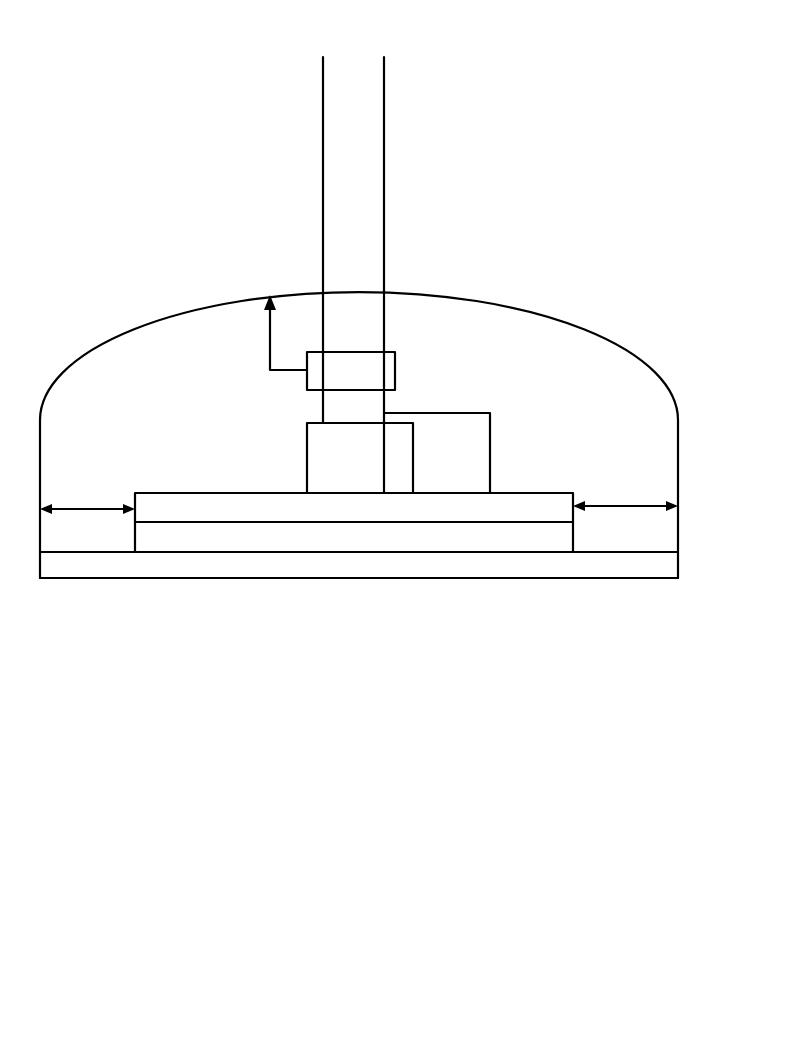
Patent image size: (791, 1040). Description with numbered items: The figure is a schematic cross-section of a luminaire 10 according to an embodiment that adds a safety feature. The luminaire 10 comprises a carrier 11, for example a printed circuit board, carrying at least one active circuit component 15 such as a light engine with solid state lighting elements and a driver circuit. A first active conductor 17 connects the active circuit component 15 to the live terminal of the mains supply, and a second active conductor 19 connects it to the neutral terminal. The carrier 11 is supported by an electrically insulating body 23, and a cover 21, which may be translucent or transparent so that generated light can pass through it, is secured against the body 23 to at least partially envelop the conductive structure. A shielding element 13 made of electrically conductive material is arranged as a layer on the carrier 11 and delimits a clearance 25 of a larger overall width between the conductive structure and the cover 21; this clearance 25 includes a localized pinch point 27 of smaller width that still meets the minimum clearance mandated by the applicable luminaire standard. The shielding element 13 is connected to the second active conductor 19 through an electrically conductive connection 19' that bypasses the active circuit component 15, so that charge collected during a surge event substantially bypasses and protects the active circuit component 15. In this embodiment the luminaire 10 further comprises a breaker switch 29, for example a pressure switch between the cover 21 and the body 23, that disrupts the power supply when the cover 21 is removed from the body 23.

The luminaire 10 is at (373, 710).
The carrier 11 is at (298, 542).
The shielding element 13 is at (550, 512).
The active circuit component 15 is at (318, 450).
The first active conductor 17 is at (323, 116).
The second active conductor 19 is at (448, 235).
The electrically conductive connection 19' is at (438, 403).
The cover 21 is at (535, 310).
The body 23 is at (145, 565).
The clearance 25 is at (628, 543).
The pinch point 27 is at (80, 545).
The breaker switch 29 is at (315, 360).